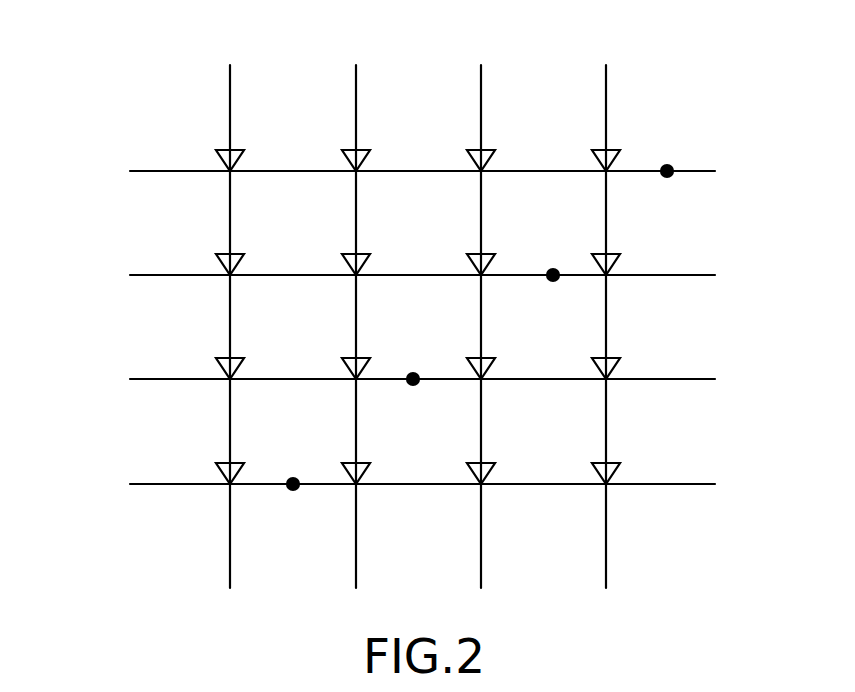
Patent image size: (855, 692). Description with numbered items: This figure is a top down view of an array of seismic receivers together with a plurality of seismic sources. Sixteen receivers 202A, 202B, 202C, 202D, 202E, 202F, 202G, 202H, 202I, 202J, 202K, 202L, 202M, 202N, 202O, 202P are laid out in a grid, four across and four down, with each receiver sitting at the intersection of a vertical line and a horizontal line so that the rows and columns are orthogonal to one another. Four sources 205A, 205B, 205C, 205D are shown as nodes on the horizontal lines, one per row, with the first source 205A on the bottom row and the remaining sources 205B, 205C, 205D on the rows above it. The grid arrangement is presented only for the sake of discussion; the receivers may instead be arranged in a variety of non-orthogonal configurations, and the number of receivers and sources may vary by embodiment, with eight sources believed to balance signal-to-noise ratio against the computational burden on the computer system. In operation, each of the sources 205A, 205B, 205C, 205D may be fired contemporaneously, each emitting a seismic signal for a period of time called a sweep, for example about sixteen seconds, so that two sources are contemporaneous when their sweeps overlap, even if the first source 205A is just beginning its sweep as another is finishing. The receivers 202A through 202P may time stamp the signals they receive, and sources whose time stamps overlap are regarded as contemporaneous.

The receiver 202A is at (236, 149).
The receiver 202B is at (362, 149).
The receiver 202C is at (487, 149).
The receiver 202D is at (612, 149).
The receiver 202E is at (236, 253).
The receiver 202F is at (362, 253).
The receiver 202G is at (487, 253).
The receiver 202H is at (612, 253).
The receiver 202I is at (236, 357).
The receiver 202J is at (362, 357).
The receiver 202K is at (530, 332).
The receiver 202L is at (612, 357).
The receiver 202M is at (236, 462).
The receiver 202N is at (408, 437).
The receiver 202O is at (487, 462).
The receiver 202P is at (612, 462).
The source 205A is at (293, 489).
The source 205B is at (413, 384).
The source 205C is at (553, 280).
The source 205D is at (667, 176).